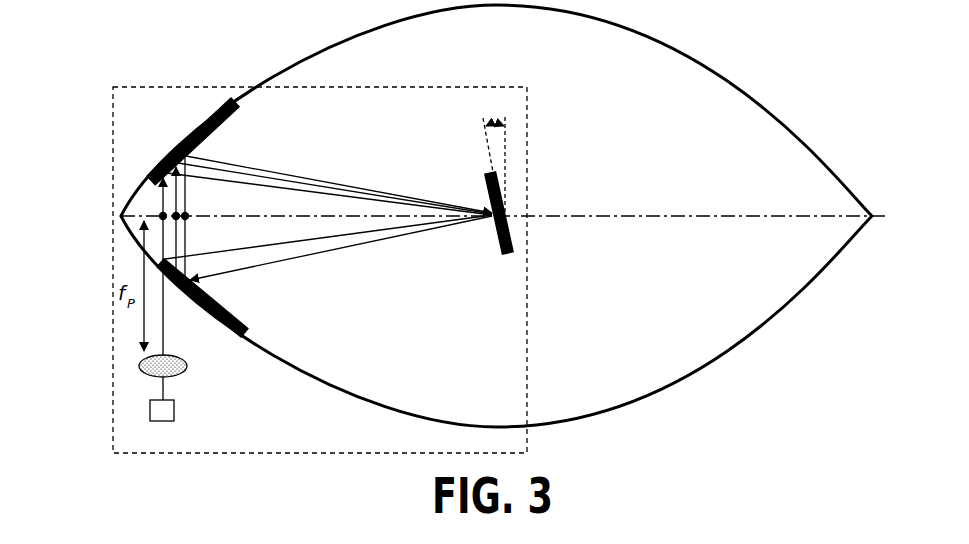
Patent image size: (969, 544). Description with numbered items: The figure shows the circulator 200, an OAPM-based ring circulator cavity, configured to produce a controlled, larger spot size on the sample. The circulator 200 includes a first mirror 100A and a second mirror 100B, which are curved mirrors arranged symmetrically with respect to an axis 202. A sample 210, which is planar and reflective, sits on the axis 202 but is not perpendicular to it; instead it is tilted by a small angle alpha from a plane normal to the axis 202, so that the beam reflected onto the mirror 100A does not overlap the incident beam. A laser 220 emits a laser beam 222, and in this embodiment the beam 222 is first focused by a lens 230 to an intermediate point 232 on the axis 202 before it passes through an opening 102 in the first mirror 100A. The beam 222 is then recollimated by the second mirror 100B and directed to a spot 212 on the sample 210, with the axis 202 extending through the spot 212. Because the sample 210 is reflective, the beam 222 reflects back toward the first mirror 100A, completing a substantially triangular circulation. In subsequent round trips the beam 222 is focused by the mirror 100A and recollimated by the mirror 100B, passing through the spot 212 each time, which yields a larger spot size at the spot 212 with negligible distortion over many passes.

The circulator 200 is at (117, 84).
The first mirror 100A is at (220, 339).
The second mirror 100B is at (193, 132).
The opening 102 is at (130, 256).
The axis 202 is at (658, 216).
The sample 210 is at (512, 238).
The spot 212 is at (494, 222).
The laser 220 is at (150, 412).
The laser beam 222 is at (160, 390).
The lens 230 is at (140, 366).
The intermediate point 232 is at (158, 208).